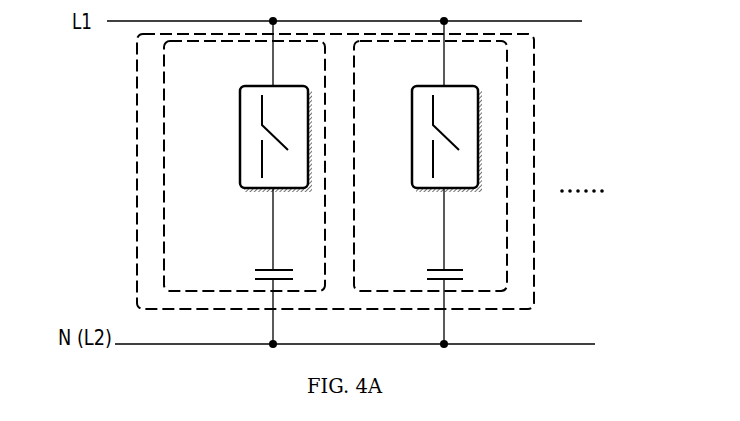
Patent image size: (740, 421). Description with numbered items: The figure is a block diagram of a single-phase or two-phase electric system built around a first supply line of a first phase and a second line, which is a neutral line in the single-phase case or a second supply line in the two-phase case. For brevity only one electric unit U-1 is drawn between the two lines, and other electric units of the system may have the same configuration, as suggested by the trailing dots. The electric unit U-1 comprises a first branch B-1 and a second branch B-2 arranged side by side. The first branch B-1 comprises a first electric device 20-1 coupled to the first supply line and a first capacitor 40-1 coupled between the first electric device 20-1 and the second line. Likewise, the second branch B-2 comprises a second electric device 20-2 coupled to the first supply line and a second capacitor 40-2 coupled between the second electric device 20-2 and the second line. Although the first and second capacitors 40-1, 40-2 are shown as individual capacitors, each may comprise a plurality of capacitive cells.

The first electric device 20-1 is at (257, 86).
The second electric device 20-2 is at (432, 86).
The first capacitor 40-1 is at (263, 270).
The second capacitor 40-2 is at (437, 270).
The first branch B-1 is at (163, 248).
The second branch B-2 is at (507, 82).
The electric unit U-1 is at (137, 290).